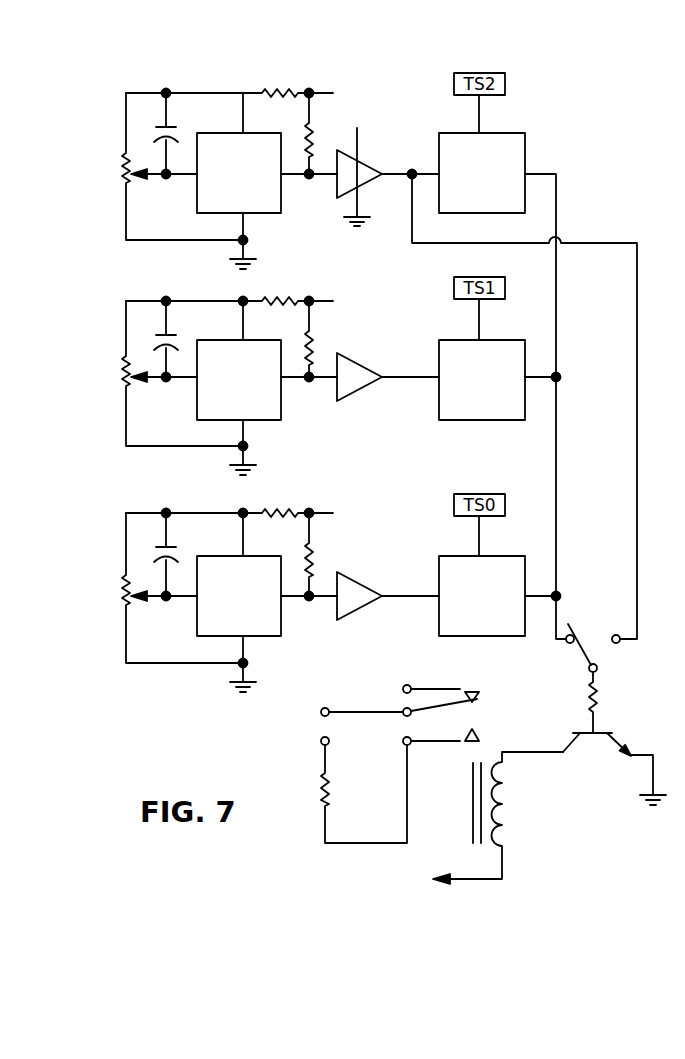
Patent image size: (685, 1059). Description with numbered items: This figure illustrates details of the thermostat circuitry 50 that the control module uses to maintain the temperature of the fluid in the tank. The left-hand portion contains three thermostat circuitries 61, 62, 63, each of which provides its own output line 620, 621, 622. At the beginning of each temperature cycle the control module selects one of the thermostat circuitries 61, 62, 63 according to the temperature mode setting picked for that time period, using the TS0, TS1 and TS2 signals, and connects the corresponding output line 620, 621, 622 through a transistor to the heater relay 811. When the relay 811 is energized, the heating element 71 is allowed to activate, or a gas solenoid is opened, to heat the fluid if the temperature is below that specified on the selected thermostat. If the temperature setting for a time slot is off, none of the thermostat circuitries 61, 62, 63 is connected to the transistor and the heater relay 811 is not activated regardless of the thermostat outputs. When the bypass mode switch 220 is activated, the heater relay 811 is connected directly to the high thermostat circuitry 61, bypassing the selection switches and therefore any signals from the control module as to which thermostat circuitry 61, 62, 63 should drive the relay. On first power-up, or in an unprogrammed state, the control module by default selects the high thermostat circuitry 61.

The thermostat circuitry 50 is at (143, 90).
The high thermostat circuitry 61 is at (367, 138).
The thermostat circuitry 62 is at (362, 350).
The thermostat circuitry 63 is at (357, 565).
The output line 620 is at (558, 168).
The output line 621 is at (537, 366).
The output line 622 is at (537, 584).
The bypass mode 220 is at (606, 650).
The heating element 71 is at (316, 764).
The heater relay 811 is at (511, 786).